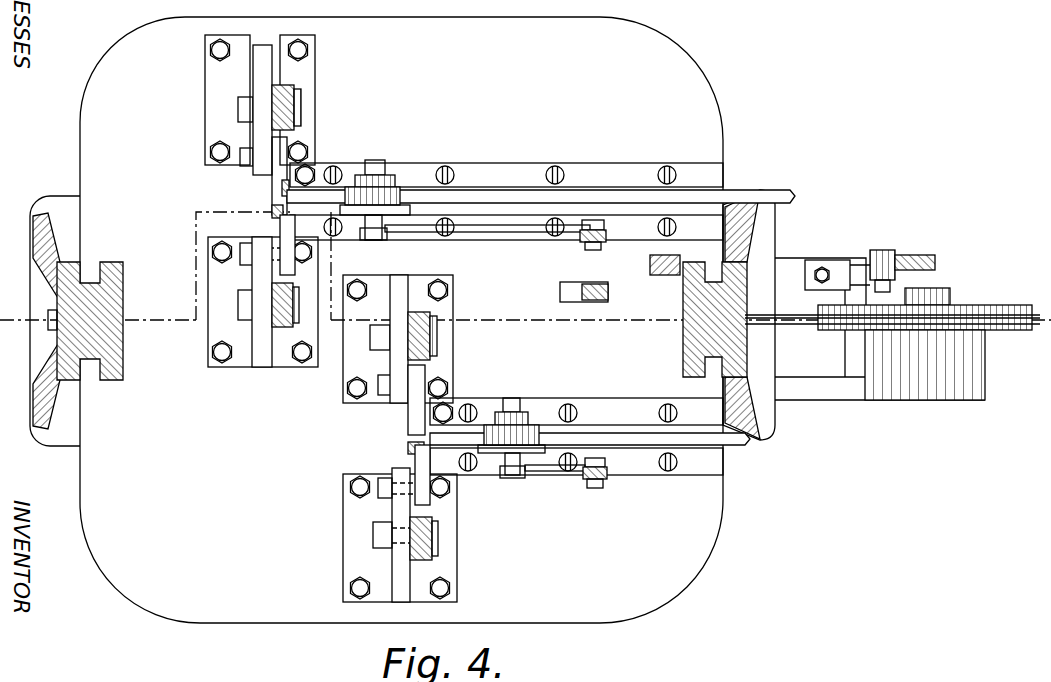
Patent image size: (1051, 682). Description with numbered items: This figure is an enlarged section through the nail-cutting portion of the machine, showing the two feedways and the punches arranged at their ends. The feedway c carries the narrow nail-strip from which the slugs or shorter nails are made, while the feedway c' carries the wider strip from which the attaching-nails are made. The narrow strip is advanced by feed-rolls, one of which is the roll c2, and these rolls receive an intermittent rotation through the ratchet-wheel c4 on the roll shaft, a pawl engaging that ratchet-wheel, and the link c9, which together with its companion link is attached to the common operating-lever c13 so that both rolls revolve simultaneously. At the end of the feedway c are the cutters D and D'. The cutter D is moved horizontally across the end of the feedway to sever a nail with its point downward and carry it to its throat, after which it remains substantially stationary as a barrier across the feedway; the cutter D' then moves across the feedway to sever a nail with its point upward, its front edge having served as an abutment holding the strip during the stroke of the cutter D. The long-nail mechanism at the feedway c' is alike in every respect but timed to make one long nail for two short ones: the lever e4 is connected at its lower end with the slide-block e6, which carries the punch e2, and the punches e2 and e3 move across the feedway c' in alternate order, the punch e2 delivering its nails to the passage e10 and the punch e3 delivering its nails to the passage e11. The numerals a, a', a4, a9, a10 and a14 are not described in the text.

The cutter D is at (275, 101).
The bearing bar a9 is at (264, 80).
The adjusting nut a4 is at (276, 103).
The pivot block a' is at (258, 183).
The pivot pin a is at (258, 204).
The cutter D' is at (263, 291).
The lower bearing bar a14 is at (262, 356).
The lower adjusting nut a10 is at (274, 317).
The feedway c is at (541, 168).
The feed-roll c2 is at (392, 192).
The ratchet-wheel c4 is at (396, 215).
The link c9 is at (502, 228).
The operating-lever c13 is at (586, 236).
The feedway c' is at (590, 468).
The slide-block e6 is at (400, 358).
The lever e4 is at (424, 333).
The punch e2 is at (418, 415).
The passage e11 is at (446, 415).
The passage e10 is at (412, 450).
The punch e3 is at (426, 462).